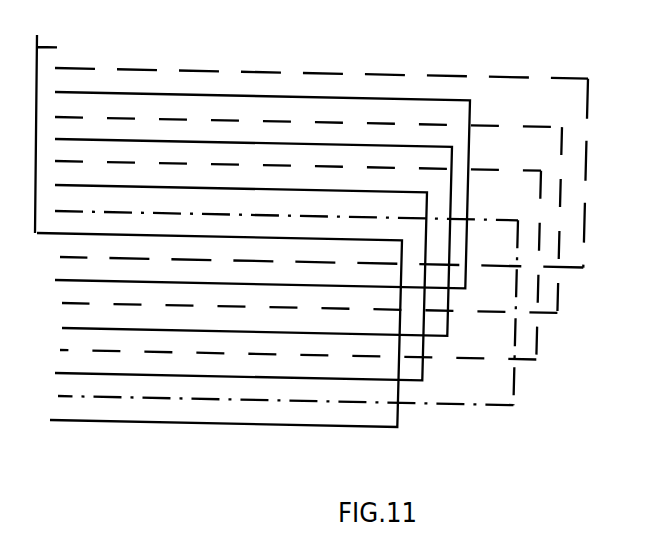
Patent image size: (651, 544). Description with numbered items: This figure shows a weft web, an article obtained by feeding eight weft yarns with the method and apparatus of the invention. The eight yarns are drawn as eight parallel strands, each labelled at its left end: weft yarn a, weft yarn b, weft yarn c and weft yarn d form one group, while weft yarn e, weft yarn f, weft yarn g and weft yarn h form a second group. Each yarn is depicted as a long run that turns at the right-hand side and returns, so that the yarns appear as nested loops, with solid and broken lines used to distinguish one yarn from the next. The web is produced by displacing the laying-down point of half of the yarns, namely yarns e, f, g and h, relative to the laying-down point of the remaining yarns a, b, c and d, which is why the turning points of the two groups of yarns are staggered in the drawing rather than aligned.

The weft yarn a is at (215, 330).
The weft yarn b is at (274, 308).
The weft yarn c is at (230, 283).
The weft yarn d is at (286, 261).
The weft yarn e is at (241, 238).
The weft yarn f is at (300, 215).
The weft yarn g is at (252, 190).
The weft yarn h is at (312, 168).